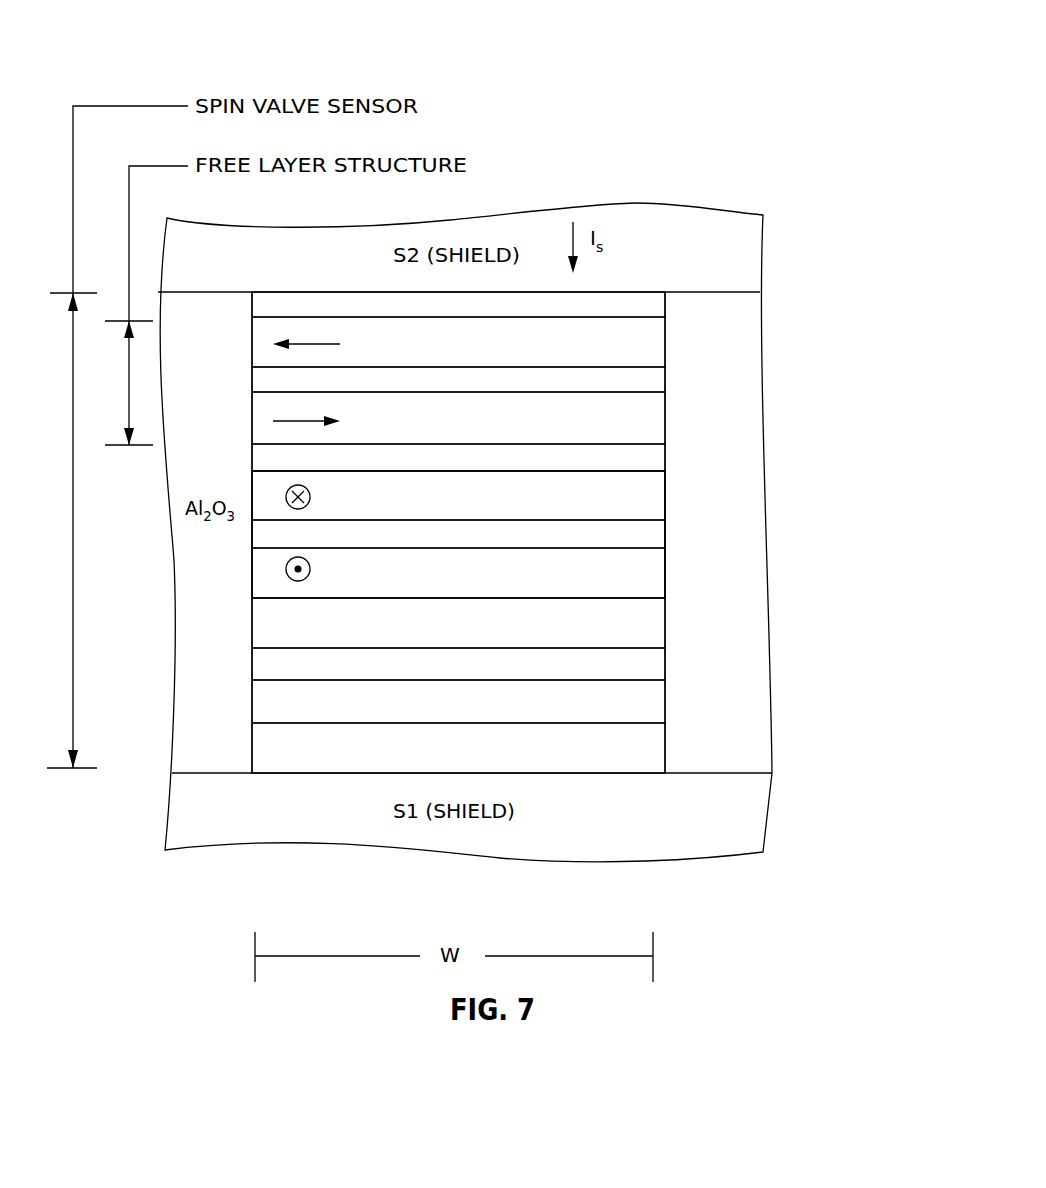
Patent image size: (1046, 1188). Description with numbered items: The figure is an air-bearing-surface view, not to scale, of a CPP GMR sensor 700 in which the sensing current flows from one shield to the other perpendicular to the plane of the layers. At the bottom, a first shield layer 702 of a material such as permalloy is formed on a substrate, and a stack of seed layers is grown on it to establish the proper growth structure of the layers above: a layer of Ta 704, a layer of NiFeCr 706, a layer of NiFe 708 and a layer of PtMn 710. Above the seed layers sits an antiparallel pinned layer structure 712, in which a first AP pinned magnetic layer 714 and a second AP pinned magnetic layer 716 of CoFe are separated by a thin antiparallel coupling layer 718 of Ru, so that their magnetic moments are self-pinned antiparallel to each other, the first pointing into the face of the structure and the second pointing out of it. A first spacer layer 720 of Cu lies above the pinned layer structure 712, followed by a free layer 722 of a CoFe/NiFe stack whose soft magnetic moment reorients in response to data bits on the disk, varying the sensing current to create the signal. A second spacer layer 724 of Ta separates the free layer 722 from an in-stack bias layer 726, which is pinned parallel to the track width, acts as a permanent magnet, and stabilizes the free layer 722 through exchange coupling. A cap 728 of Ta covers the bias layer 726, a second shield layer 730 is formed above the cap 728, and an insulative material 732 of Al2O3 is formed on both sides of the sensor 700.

The CPP GMR sensor 700 is at (682, 148).
The first shield layer 702 is at (771, 800).
The layer of Ta 704 is at (665, 745).
The layer of NiFeCr 706 is at (665, 705).
The layer of NiFe 708 is at (665, 665).
The layer of PtMn 710 is at (665, 622).
The antiparallel pinned layer structure 712 is at (105, 473).
The first AP pinned magnetic layer 714 is at (665, 572).
The second AP pinned magnetic layer 716 is at (665, 486).
The antiparallel coupling layer 718 is at (665, 539).
The first spacer layer 720 is at (665, 457).
The free layer 722 is at (665, 417).
The second spacer layer 724 is at (665, 379).
The in-stack bias layer 726 is at (665, 345).
The cap 728 is at (665, 312).
The second shield layer 730 is at (761, 247).
The insulative material 732 is at (763, 510).